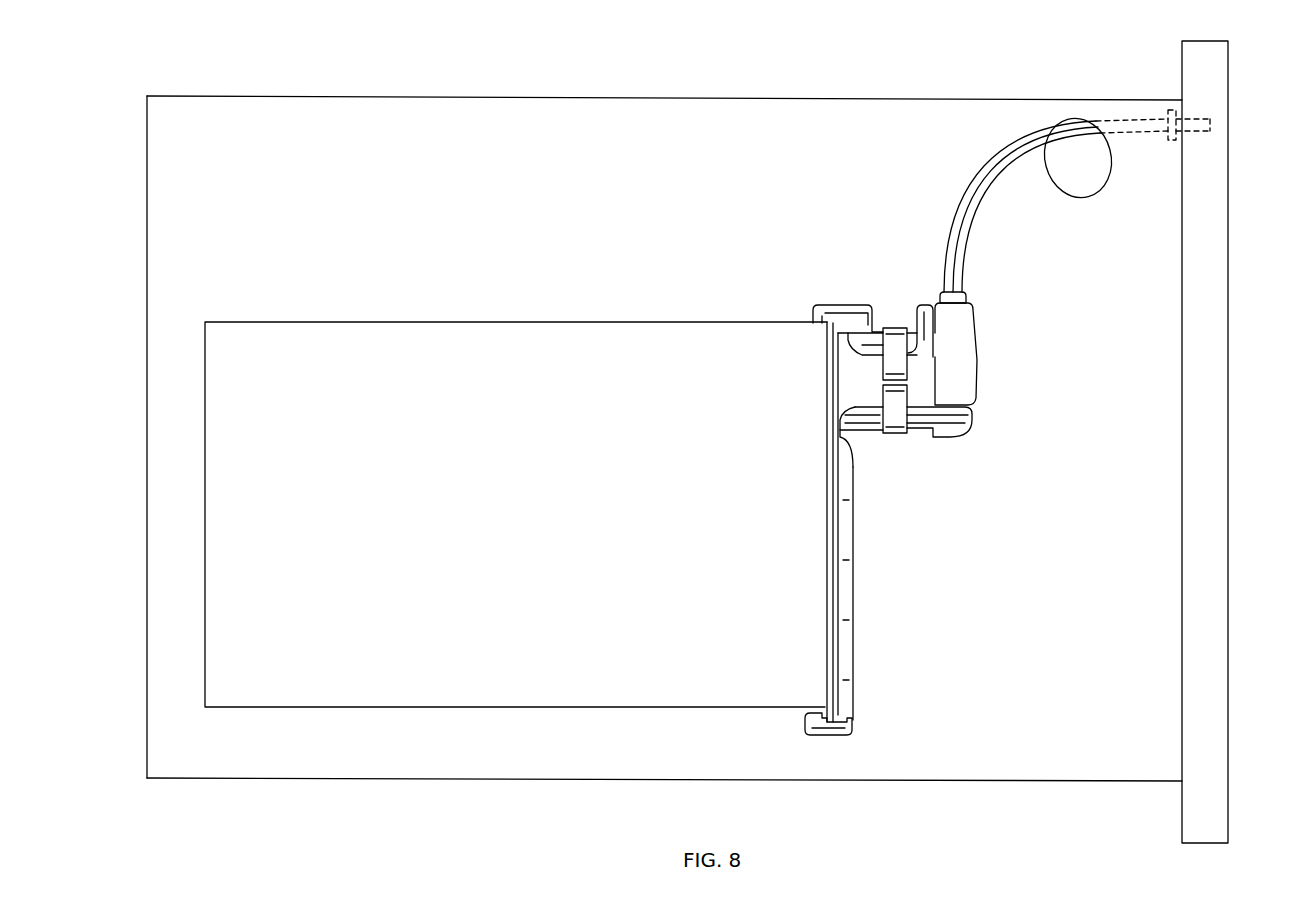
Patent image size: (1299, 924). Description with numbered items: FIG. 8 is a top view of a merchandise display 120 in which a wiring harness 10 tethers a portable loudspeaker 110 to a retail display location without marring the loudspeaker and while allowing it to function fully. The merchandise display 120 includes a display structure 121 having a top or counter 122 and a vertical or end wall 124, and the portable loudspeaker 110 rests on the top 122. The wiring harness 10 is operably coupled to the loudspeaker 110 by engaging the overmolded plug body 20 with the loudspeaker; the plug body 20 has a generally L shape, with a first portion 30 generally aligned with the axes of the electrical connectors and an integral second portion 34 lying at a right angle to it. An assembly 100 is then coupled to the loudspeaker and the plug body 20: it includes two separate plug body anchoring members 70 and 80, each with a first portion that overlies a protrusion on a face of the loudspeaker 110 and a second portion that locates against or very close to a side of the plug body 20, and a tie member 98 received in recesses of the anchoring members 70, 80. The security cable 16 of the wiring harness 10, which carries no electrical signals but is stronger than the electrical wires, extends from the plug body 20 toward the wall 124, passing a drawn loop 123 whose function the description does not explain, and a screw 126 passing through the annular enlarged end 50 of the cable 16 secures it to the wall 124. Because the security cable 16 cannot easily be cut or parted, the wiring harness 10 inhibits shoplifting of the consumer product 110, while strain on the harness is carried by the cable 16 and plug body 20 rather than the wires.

The wiring harness 10 is at (898, 280).
The security cable 16 is at (1118, 120).
The plug body 20 is at (931, 370).
The first portion 30 is at (933, 408).
The second portion 34 is at (978, 373).
The end 50 is at (1166, 142).
The plug body anchoring member 70 is at (856, 613).
The second plug body anchoring member 80 is at (810, 303).
The tie member 98 is at (901, 315).
The assembly 100 is at (847, 270).
The portable loudspeaker 110 is at (208, 628).
The merchandise display 120 is at (664, 461).
The display structure 121 is at (970, 790).
The top 122 is at (207, 779).
The tubing loop 123 is at (1106, 183).
The end wall 124 is at (1229, 750).
The screw 126 is at (1210, 125).